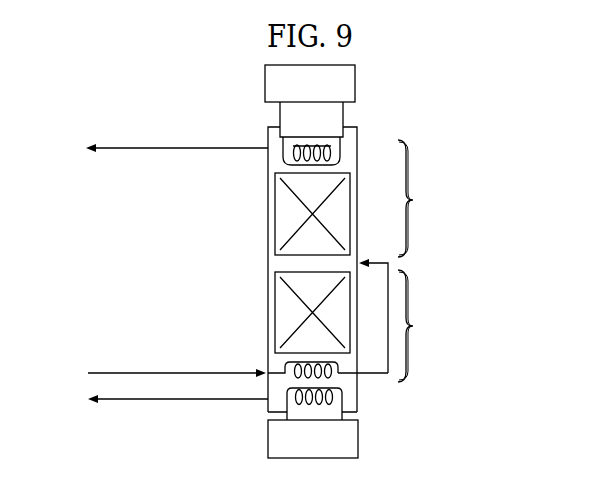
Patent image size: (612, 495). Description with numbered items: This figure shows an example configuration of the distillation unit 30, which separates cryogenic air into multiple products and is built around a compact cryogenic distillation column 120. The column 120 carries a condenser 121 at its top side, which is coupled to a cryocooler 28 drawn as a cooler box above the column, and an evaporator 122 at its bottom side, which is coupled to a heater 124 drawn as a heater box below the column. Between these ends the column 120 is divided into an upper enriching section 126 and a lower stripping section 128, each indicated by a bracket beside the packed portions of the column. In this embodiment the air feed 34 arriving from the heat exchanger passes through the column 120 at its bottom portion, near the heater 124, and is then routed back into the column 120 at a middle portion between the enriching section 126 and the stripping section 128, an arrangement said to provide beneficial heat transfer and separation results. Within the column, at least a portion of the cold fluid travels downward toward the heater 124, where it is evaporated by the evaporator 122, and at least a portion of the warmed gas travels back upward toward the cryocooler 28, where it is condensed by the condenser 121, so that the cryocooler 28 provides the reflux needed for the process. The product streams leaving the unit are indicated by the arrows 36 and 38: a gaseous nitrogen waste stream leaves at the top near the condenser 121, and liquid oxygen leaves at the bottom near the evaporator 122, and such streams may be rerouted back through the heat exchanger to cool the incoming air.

The cryocooler 28 is at (265, 82).
The distillation unit 30 is at (230, 257).
The air feed 34 is at (165, 372).
The arrow (GOX or waste stream) 36 is at (160, 148).
The arrow (LOX or waste stream) 38 is at (165, 402).
The compact cryogenic distillation column 120 is at (268, 313).
The condenser 121 is at (285, 152).
The evaporator 122 is at (342, 401).
The heater 124 is at (268, 437).
The enriching section 126 is at (388, 199).
The stripping section 128 is at (388, 327).